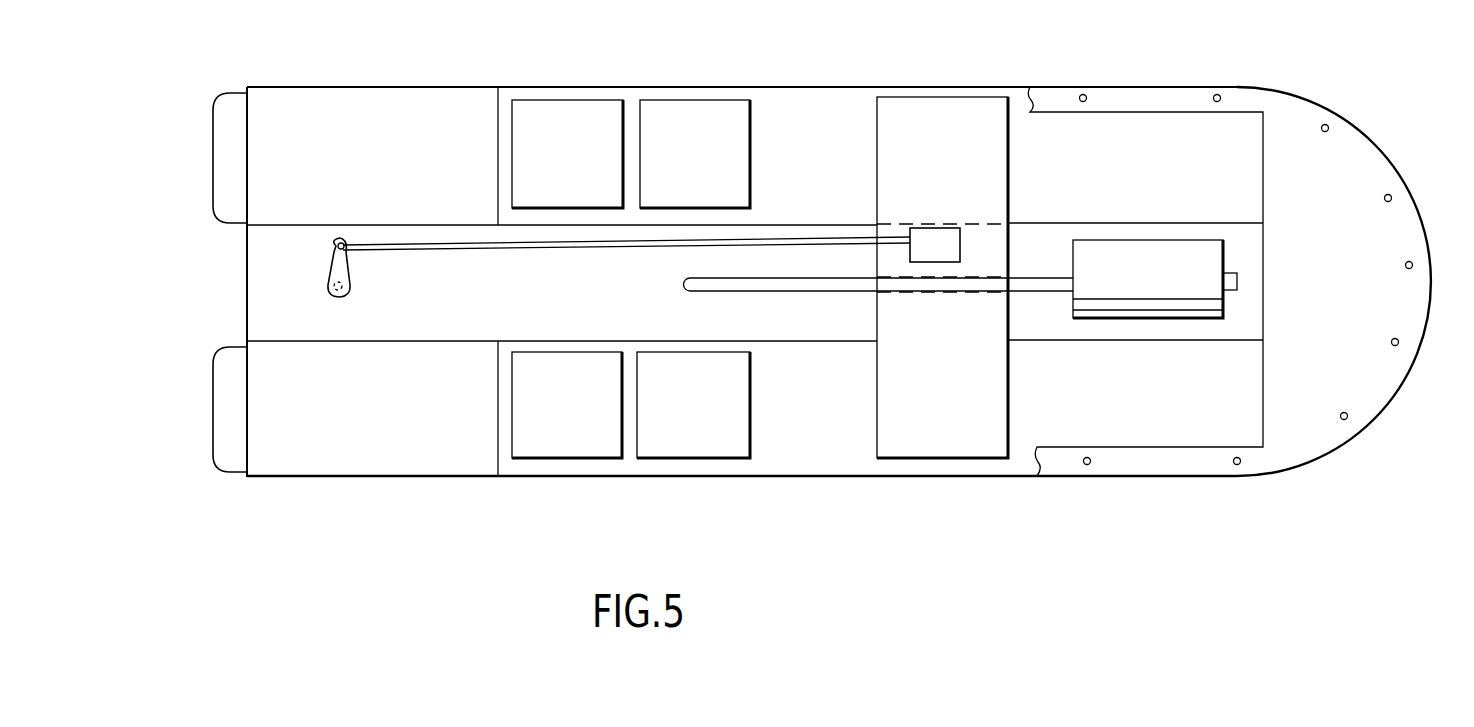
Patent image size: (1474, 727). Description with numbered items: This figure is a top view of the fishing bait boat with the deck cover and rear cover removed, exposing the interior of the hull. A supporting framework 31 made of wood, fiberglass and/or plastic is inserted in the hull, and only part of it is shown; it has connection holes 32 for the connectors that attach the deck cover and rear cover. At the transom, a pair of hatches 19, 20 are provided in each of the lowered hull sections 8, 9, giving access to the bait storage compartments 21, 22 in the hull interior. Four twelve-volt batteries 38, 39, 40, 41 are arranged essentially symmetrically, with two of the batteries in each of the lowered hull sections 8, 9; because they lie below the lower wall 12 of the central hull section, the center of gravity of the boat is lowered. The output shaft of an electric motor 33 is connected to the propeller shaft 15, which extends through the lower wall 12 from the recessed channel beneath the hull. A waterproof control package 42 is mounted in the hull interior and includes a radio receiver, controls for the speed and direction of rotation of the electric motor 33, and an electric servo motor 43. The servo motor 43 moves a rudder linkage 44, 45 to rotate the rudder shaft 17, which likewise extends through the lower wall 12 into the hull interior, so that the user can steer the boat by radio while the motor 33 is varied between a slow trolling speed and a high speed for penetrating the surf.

The lowered hull section 8 is at (791, 96).
The lowered hull section 9 is at (800, 462).
The lower wall of the central hull section 12 is at (256, 322).
The propeller shaft 15 is at (775, 292).
The rudder shaft 17 is at (343, 303).
The hatch 19 is at (220, 114).
The hatch 20 is at (218, 430).
The bait storage compartment 21 is at (332, 106).
The bait storage compartment 22 is at (346, 462).
The supporting framework 31 is at (1378, 155).
The connection holes 32 is at (1328, 126).
The electric motor 33 is at (1165, 289).
The battery 38 is at (578, 171).
The battery 39 is at (704, 171).
The battery 40 is at (584, 423).
The battery 41 is at (695, 423).
The waterproof control package 42 is at (938, 440).
The electric servo motor 43 is at (936, 243).
The rudder linkage 44 is at (513, 250).
The rudder linkage 45 is at (330, 268).